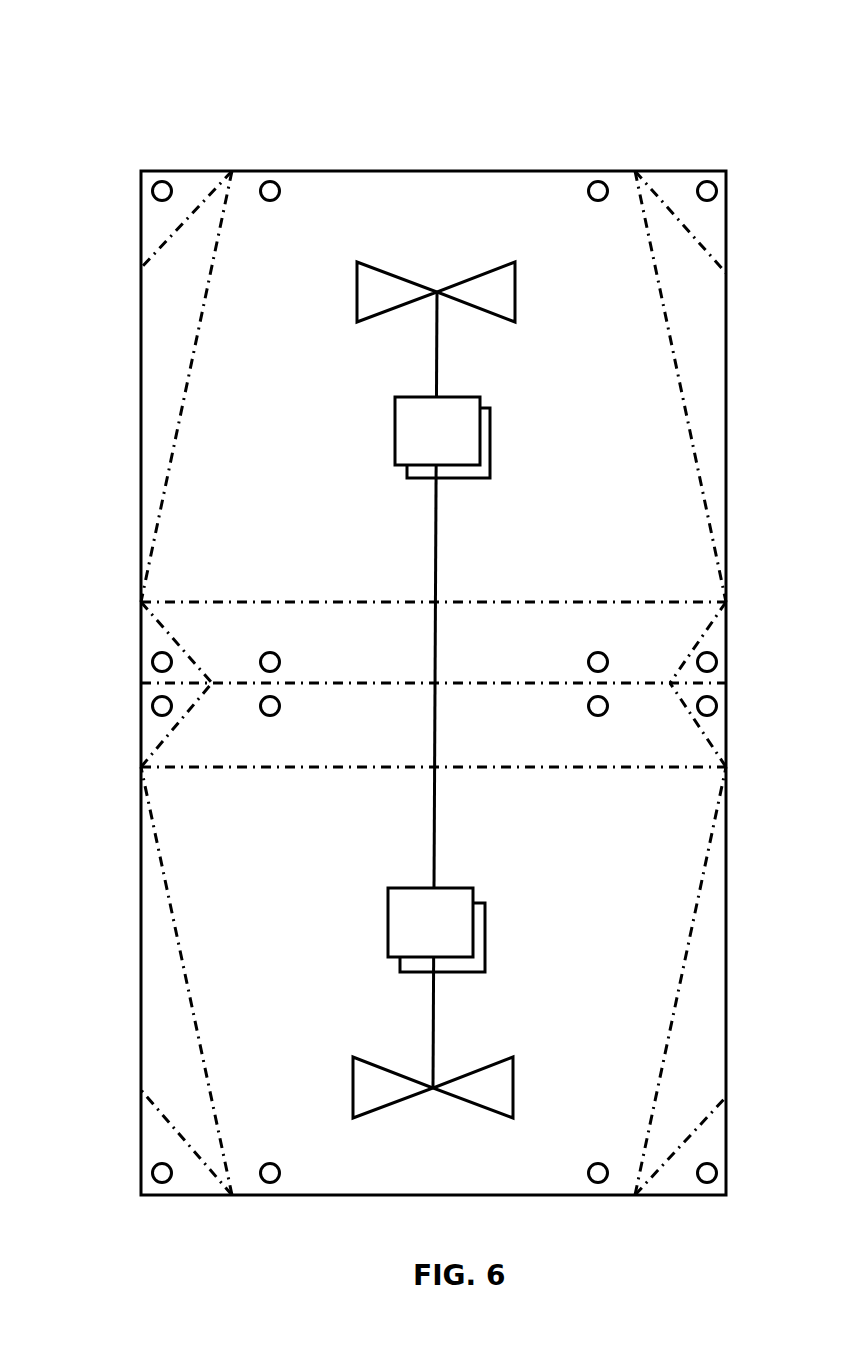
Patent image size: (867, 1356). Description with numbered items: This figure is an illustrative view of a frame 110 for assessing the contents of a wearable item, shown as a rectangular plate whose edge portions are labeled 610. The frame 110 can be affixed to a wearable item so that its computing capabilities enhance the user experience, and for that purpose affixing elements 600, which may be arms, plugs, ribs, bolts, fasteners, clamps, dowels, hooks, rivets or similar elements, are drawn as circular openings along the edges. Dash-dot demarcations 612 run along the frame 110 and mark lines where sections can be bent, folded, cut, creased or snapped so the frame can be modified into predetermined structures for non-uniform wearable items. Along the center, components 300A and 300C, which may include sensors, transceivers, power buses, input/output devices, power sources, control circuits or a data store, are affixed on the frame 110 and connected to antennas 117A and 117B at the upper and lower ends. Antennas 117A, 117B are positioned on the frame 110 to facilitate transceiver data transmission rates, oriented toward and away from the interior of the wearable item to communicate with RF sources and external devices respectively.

The frame 110 is at (300, 70).
The affixing elements 600 is at (154, 190).
The mounting plate 610 is at (453, 204).
The demarcations 612 is at (162, 246).
The antenna 117A is at (357, 300).
The antenna 117B is at (353, 1080).
The component 300A is at (395, 437).
The component 300C is at (388, 923).